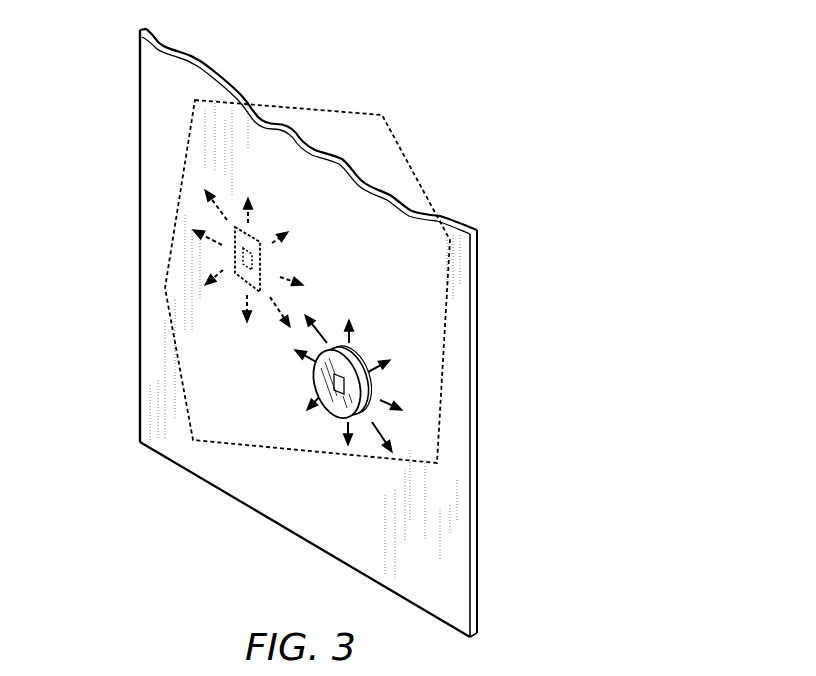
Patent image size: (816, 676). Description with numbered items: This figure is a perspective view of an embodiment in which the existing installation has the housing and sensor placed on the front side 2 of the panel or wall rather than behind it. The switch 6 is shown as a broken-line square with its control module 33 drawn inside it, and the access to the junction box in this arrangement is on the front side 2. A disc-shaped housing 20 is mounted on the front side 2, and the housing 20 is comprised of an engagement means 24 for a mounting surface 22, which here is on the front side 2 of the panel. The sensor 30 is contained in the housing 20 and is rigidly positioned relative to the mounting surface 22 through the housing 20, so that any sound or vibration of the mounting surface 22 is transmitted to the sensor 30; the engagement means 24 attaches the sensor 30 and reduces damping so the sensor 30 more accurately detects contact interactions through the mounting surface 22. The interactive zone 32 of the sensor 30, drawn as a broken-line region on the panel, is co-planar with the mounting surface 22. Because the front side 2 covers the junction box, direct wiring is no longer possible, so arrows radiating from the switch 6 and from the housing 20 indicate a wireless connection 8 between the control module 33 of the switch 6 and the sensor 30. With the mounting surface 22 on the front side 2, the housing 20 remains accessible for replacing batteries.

The front side 2 is at (148, 88).
The mounting surface 22 is at (148, 218).
The interactive zone 32 is at (170, 305).
The switch 6 is at (297, 332).
The control module 33 is at (248, 260).
The wireless connection 8 is at (312, 288).
The engagement means 24 is at (343, 383).
The housing 20 is at (330, 412).
The sensor 30 is at (338, 388).